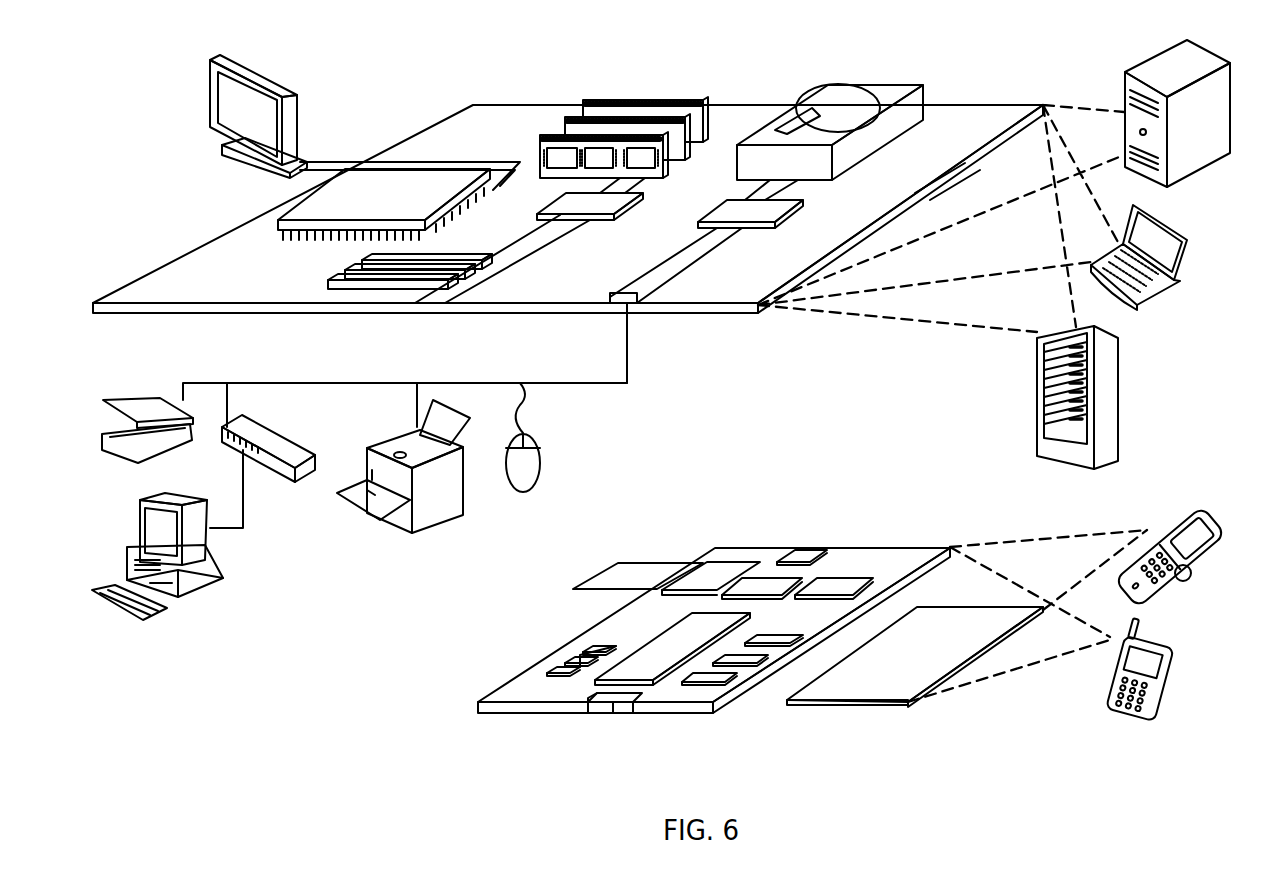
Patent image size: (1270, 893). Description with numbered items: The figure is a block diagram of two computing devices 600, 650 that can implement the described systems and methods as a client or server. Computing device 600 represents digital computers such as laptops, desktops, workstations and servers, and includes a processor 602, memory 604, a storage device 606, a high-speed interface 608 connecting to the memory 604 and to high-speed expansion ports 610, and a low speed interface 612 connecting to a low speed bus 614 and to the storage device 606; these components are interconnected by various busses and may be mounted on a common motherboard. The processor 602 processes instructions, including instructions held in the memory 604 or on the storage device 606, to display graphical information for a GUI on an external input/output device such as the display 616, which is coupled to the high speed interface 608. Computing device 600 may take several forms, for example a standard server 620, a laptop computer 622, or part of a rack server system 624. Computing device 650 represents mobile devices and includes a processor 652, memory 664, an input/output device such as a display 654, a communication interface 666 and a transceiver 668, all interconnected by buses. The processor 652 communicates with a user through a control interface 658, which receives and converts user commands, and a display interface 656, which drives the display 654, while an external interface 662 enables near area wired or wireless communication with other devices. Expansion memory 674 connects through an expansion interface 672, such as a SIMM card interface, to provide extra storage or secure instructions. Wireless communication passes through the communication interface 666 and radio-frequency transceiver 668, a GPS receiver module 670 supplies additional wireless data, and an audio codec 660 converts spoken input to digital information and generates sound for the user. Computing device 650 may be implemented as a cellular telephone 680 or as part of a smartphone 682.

The computing device 600 is at (400, 82).
The processor 602 is at (280, 220).
The memory 604 is at (597, 107).
The storage device 606 is at (818, 87).
The high-speed interface 608 is at (567, 203).
The high-speed expansion ports 610 is at (340, 277).
The low speed interface 612 is at (733, 207).
The low speed bus 614 is at (633, 303).
The display 616 is at (221, 54).
The standard server 620 is at (1125, 93).
The laptop computer 622 is at (1185, 232).
The rack server system 624 is at (1037, 422).
The computing device 650 is at (455, 710).
The processor 652 is at (647, 672).
The display 654 is at (870, 687).
The display interface 656 is at (713, 682).
The control interface 658 is at (743, 657).
The audio codec 660 is at (770, 635).
The external interface 662 is at (613, 703).
The memory 664 is at (567, 663).
The communication interface 666 is at (762, 582).
The transceiver 668 is at (838, 580).
The GPS receiver module 670 is at (808, 550).
The expansion interface 672 is at (682, 562).
The expansion memory 674 is at (618, 562).
The cellular telephone 680 is at (1153, 478).
The smartphone 682 is at (1113, 675).